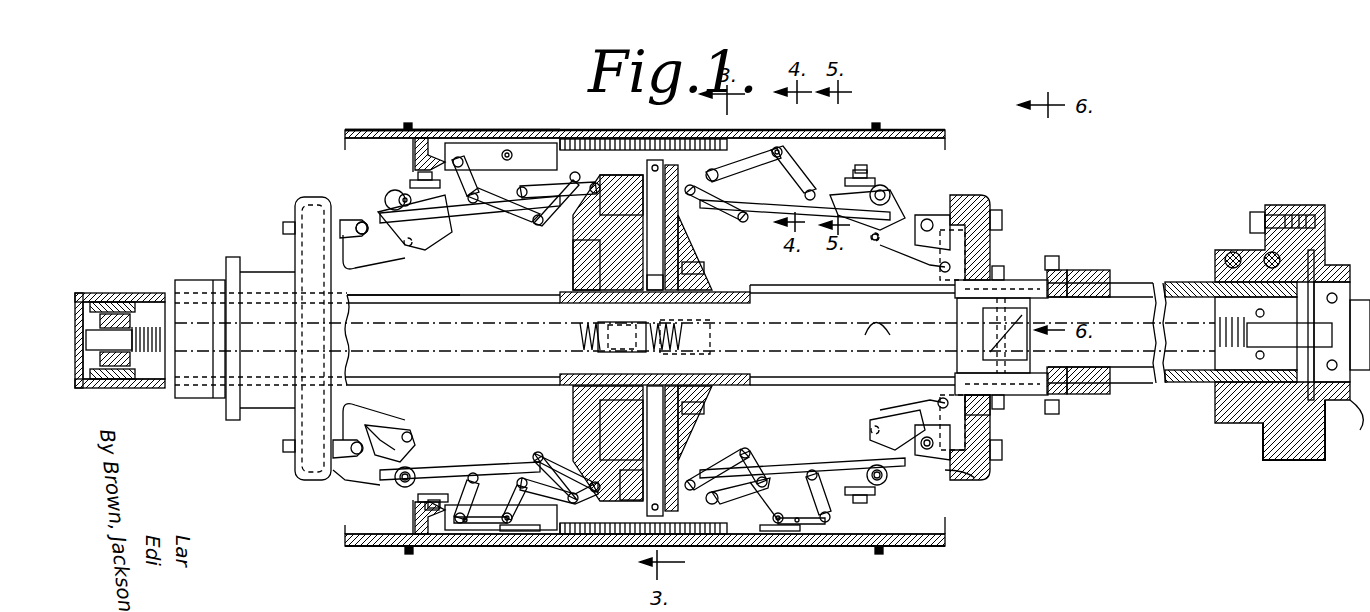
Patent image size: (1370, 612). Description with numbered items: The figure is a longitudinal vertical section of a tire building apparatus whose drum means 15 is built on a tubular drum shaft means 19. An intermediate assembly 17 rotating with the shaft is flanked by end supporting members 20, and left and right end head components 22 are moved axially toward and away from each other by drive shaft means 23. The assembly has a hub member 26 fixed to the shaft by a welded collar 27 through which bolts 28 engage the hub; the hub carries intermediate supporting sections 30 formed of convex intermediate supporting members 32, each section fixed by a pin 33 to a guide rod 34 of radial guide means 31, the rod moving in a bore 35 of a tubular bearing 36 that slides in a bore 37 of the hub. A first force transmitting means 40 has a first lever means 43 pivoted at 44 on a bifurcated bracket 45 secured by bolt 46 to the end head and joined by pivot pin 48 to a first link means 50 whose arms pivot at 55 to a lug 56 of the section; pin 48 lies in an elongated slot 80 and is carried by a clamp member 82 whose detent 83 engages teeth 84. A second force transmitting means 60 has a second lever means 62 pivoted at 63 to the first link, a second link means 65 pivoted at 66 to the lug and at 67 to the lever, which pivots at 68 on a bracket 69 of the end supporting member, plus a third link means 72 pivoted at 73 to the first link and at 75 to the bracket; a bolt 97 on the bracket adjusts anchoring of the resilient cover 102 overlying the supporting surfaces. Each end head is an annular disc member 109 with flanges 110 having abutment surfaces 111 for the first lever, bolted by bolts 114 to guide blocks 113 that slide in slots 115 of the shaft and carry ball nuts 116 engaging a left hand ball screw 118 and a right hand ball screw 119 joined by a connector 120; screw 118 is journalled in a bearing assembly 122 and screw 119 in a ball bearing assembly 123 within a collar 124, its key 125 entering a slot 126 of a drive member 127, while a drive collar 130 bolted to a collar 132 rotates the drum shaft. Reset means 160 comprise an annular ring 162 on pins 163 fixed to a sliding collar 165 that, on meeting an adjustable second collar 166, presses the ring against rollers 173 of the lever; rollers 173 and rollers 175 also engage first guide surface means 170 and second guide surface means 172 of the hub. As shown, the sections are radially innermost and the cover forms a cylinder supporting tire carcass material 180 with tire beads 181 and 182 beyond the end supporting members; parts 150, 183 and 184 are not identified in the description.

The drum means 15 is at (540, 105).
The intermediate assembly 17 is at (572, 278).
The tubular drum shaft means 19 is at (568, 388).
The end supporting members 20 is at (490, 130).
The end head components 22 is at (290, 473).
The drive shaft means 23 is at (470, 375).
The hub member 26 is at (590, 415).
The collar 27 is at (700, 410).
The bolts 28 is at (705, 268).
The intermediate supporting sections 30 is at (560, 160).
The radial guide means 31 is at (652, 296).
The intermediate supporting members 32 is at (572, 139).
The pin 33 is at (610, 535).
The guide rod 34 is at (700, 412).
The bore 35 is at (621, 205).
The tubular bearing 36 is at (650, 255).
The bore 37 is at (637, 282).
The first force transmitting means 40 is at (642, 338).
The first lever means 43 is at (375, 245).
The pivot 44 is at (358, 222).
The bifurcated bracket 45 is at (345, 220).
The bolt 46 is at (1003, 215).
The pivot pin 48 is at (400, 192).
The first link means 50 is at (641, 233).
The pivot 55 is at (748, 126).
The lug 56 is at (608, 139).
The second force transmitting means 60 is at (650, 455).
The second lever means 62 is at (645, 471).
The pivot 63 is at (664, 484).
The second link means 65 is at (705, 475).
The pivot 66 is at (598, 488).
The pivot 67 is at (533, 455).
The pivot 68 is at (762, 556).
The bracket 69 is at (465, 525).
The third link means 72 is at (657, 334).
The pivot 73 is at (478, 205).
The pivot 75 is at (455, 525).
The elongated slot 80 is at (395, 478).
The clamp member 82 is at (425, 500).
The detent 83 is at (641, 217).
The teeth or serrations 84 is at (377, 230).
The bolt 97 is at (483, 525).
The cylindrical resilient cover 102 is at (440, 132).
The annular disc members 109 is at (990, 280).
The flanges 110 is at (972, 194).
The abutment surfaces 111 is at (338, 478).
The guide blocks 113 is at (1040, 270).
The bolts 114 is at (1000, 410).
The slots 115 is at (560, 296).
The ball nuts 116 is at (960, 330).
The left hand ball screw 118 is at (450, 330).
The right hand ball screw 119 is at (815, 320).
The connector 120 is at (650, 322).
The bearing assembly 122 is at (125, 315).
The ball bearing assembly 123 is at (1235, 425).
The collar 124 is at (1205, 384).
The key 125 is at (1275, 430).
The slot 126 is at (1353, 371).
The drive member 127 is at (1340, 282).
The drive collar 130 is at (1222, 372).
The collar 132 is at (1312, 212).
The cap 150 is at (80, 335).
The reset means 160 is at (940, 404).
The annular ring 162 is at (925, 460).
The pins 163 is at (978, 418).
The collar 165 is at (232, 420).
The second collar 166 is at (192, 398).
The first guide surface means 170 is at (734, 216).
The second guide surface means 172 is at (575, 250).
The rollers 173 is at (942, 270).
The rollers 175 is at (875, 243).
The tire carcass material 180 is at (350, 128).
The tire bead 181 is at (405, 126).
The tire bead 182 is at (878, 125).
The pivot 183 is at (815, 432).
The lever 184 is at (365, 480).